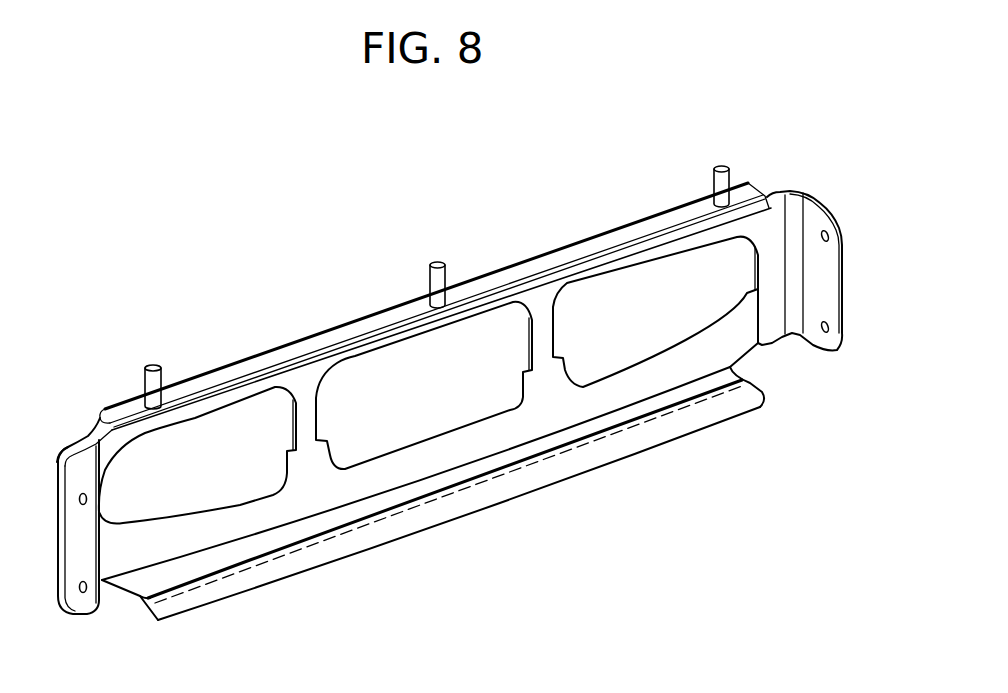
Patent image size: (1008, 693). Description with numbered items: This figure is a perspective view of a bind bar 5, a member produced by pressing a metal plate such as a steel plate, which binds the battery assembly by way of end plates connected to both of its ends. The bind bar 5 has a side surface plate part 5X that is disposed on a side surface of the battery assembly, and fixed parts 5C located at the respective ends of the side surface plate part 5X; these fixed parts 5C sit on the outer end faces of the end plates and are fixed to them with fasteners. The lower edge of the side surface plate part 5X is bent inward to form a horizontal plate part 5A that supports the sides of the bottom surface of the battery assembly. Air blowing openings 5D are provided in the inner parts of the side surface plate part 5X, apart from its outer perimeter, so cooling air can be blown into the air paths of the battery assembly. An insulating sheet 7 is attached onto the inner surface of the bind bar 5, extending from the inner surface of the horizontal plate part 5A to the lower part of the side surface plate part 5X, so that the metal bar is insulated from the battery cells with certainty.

The bind bar 5 is at (233, 221).
The side surface plate part 5X is at (545, 297).
The horizontal plate part 5A is at (553, 457).
The fixed part 5C is at (814, 225).
The air blowing opening 5D is at (213, 498).
The insulating sheet 7 is at (313, 490).